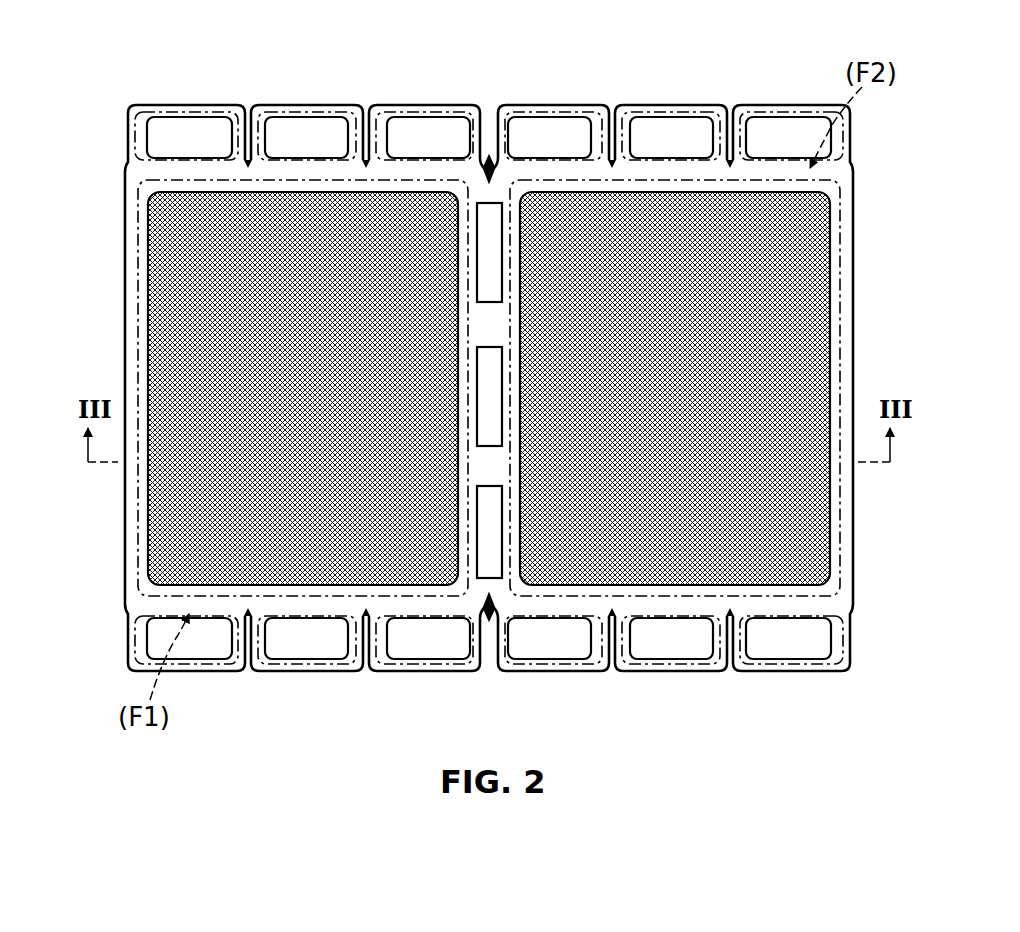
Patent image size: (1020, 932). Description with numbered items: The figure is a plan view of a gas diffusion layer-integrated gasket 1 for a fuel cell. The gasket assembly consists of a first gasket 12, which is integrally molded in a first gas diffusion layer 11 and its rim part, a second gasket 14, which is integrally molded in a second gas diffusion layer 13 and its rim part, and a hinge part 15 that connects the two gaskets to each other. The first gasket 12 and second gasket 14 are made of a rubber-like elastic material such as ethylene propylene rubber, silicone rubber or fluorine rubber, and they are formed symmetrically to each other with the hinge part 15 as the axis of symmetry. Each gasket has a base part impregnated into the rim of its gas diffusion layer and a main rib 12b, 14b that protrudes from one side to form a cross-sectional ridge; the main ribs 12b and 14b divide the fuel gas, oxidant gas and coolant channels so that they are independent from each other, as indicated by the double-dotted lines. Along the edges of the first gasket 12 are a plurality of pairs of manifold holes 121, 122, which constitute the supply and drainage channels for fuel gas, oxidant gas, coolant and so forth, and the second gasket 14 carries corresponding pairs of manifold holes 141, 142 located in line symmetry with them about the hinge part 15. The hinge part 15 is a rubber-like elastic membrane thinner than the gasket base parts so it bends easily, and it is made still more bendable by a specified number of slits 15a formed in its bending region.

The gas diffusion layer-integrated gasket 1 is at (452, 98).
The first gas diffusion layer 11 is at (318, 366).
The first gasket 12 is at (182, 162).
The manifold holes 121 is at (400, 128).
The manifold holes 122 is at (420, 645).
The main rib 12b is at (138, 246).
The second gas diffusion layer 13 is at (688, 366).
The second gasket 14 is at (780, 160).
The manifold holes 141 is at (755, 128).
The manifold holes 142 is at (780, 645).
The main rib 14b is at (842, 292).
The hinge part 15 is at (492, 322).
The slits 15a is at (490, 383).